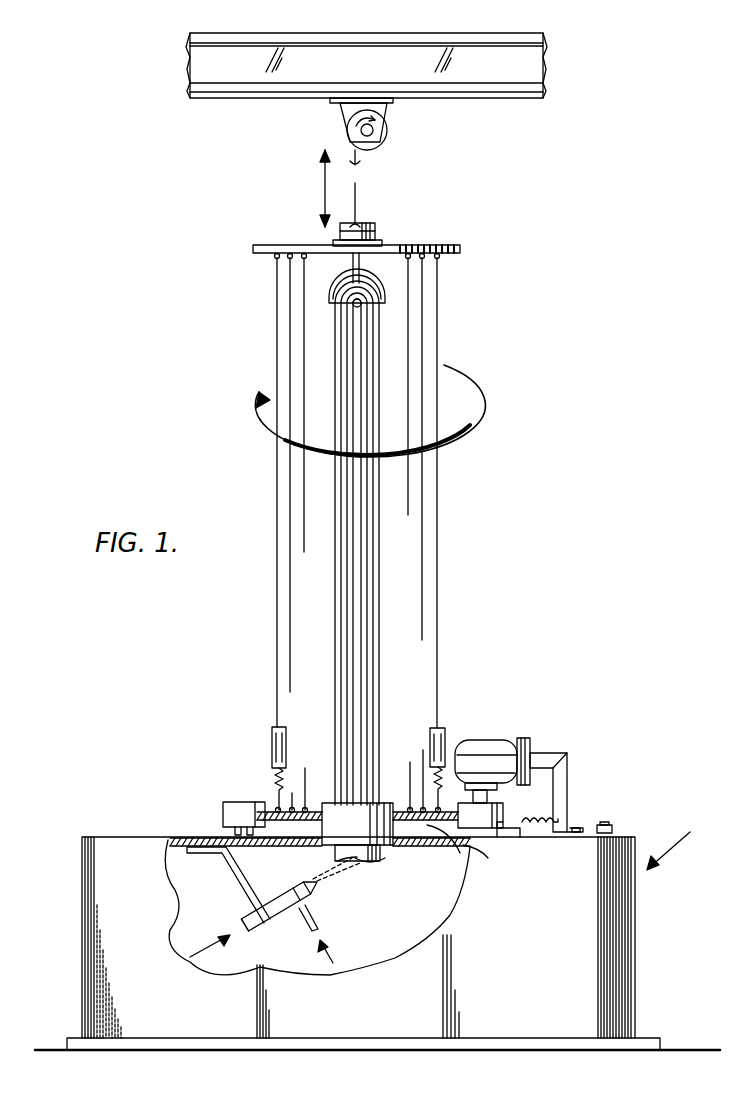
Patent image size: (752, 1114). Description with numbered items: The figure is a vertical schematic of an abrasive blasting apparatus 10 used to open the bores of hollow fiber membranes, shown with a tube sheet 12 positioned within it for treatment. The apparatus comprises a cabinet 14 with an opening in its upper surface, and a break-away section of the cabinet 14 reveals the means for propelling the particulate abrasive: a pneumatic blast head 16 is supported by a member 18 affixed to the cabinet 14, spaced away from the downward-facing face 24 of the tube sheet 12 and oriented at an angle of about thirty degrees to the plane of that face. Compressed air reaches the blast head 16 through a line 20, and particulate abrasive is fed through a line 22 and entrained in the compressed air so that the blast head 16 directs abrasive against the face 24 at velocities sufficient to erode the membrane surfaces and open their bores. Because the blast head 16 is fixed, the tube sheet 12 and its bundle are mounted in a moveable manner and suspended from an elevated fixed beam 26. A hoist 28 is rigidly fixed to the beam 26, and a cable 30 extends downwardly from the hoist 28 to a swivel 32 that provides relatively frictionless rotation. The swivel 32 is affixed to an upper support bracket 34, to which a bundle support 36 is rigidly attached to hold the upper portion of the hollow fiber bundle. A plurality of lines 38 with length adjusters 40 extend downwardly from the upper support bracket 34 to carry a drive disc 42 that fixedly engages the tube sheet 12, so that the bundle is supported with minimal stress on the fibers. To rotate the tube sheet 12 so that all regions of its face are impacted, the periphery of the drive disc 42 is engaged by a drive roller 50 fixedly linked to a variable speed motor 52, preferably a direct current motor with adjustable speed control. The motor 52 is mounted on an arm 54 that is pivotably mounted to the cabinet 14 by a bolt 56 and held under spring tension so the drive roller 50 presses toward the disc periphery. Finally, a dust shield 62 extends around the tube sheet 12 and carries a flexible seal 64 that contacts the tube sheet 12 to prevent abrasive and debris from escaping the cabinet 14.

The abrasive blasting apparatus 10 is at (377, 927).
The tube sheet 12 is at (380, 803).
The cabinet 14 is at (80, 912).
The pneumatic blast head 16 is at (312, 897).
The member 18 is at (242, 887).
The line 20 is at (247, 929).
The line 22 is at (313, 913).
The face 24 is at (367, 863).
The elevated fixed beam 26 is at (482, 98).
The hoist means 28 is at (347, 133).
The cable 30 is at (360, 205).
The swivel 32 is at (376, 229).
The upper support bracket 34 is at (298, 246).
The bundle support 36 is at (355, 263).
The lines 38 is at (422, 317).
The length adjusters 40 is at (271, 750).
The drive disc 42 is at (317, 803).
The drive roller 50 is at (477, 823).
The variable speed motor 52 is at (480, 740).
The arm 54 is at (540, 753).
The bolt 56 is at (606, 825).
The dust shield 62 is at (465, 841).
The flexible seal 64 is at (314, 853).